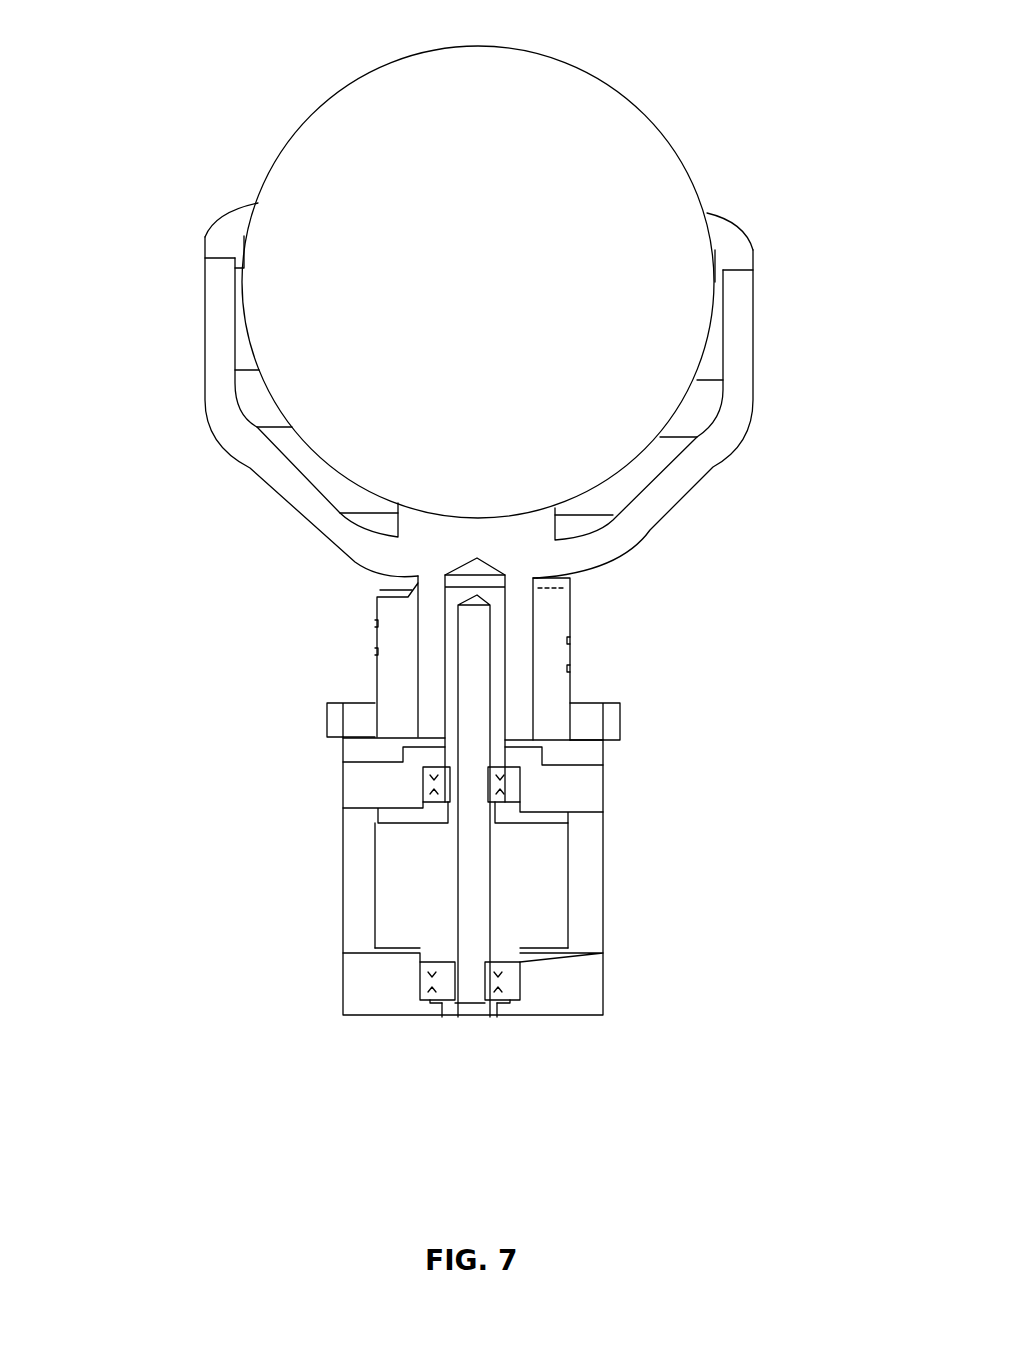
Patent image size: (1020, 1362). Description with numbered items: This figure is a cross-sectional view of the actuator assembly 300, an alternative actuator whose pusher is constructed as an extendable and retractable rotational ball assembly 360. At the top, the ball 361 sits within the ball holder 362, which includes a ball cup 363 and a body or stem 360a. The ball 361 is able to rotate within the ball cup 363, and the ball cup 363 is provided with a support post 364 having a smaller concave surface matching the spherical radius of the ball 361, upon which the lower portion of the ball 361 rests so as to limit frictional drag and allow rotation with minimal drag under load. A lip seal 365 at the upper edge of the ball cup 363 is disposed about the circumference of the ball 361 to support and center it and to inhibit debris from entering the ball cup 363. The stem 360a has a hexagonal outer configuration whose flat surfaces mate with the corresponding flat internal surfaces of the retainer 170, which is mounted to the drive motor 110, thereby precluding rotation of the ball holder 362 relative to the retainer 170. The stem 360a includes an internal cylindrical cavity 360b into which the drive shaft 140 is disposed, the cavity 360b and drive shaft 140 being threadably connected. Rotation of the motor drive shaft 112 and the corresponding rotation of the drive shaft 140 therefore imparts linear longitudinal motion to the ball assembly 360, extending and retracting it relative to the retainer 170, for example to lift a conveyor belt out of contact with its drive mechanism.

The actuator assembly 300 is at (169, 87).
The ball 361 is at (603, 82).
The lip seal 365 is at (725, 218).
The ball assembly 360 is at (180, 332).
The ball holder 362 is at (764, 438).
The ball cup 363 is at (252, 470).
The support post 364 is at (427, 530).
The stem 360a is at (535, 652).
The internal cylindrical cavity 360b is at (477, 582).
The drive shaft 140 is at (497, 688).
The motor drive shaft 112 is at (470, 728).
The retainer 170 is at (357, 675).
The drive motor 110 is at (621, 878).